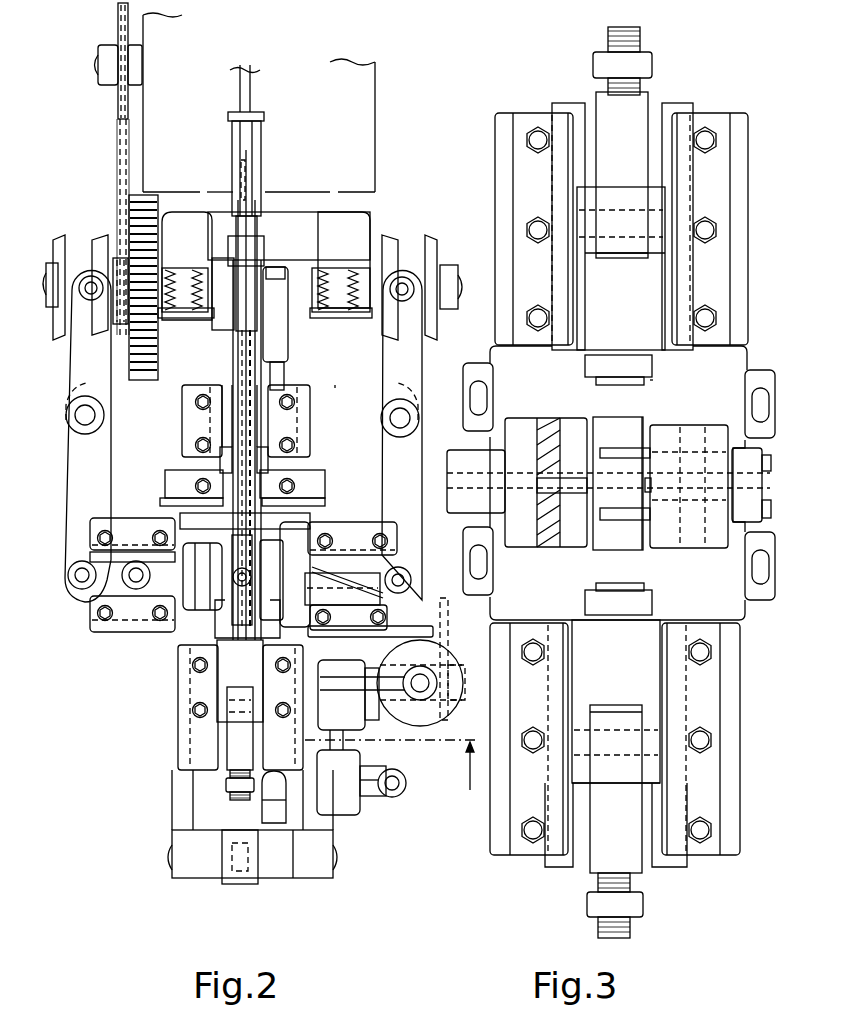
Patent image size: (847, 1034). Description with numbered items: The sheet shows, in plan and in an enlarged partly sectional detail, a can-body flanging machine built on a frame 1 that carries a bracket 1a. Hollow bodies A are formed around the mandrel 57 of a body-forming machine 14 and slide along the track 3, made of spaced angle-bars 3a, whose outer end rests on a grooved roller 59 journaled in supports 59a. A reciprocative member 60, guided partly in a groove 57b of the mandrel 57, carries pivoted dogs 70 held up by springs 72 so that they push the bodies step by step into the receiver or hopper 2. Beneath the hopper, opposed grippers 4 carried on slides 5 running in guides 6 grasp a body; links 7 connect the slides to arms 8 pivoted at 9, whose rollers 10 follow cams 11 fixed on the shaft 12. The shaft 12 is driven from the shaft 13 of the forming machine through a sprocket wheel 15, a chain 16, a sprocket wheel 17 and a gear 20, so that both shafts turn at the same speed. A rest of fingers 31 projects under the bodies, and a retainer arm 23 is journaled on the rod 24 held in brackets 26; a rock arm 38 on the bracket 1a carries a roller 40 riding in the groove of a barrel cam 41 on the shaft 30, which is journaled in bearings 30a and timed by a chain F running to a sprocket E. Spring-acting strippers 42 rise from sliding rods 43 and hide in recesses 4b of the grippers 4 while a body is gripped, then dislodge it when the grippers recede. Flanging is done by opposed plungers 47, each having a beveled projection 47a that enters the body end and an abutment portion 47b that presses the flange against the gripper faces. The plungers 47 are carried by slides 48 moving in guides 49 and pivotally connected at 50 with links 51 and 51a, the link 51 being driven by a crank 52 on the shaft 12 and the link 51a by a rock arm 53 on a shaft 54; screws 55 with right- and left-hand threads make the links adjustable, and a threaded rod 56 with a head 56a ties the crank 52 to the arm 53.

In FIG. 2, the frame 1 is at (342, 395).
In FIG. 2, the bracket 1a is at (318, 636).
In FIG. 2, the receiver or hopper 2 is at (235, 620).
In FIG. 2, the track or guideway 3 is at (234, 344).
In FIG. 2, the angle-bars 3a is at (256, 244).
In FIG. 3, the grippers 4 is at (548, 422).
In FIG. 3, the recesses 4b is at (545, 490).
In FIG. 2, the slides 5 is at (100, 598).
In FIG. 3, the slides 5 is at (608, 485).
In FIG. 2, the guides 6 is at (120, 535).
In FIG. 3, the guides 6 is at (465, 404).
In FIG. 2, the links 7 is at (239, 585).
In FIG. 2, the arms 8 is at (243, 437).
In FIG. 2, the pivot 9 is at (85, 415).
In FIG. 2, the projections or rollers 10 is at (90, 292).
In FIG. 2, the cams 11 is at (79, 246).
In FIG. 2, the shaft 12 is at (458, 290).
In FIG. 2, the shaft 13 is at (96, 65).
In FIG. 2, the can-body forming machine 14 is at (259, 102).
In FIG. 2, the sprocket wheel 15 is at (118, 18).
In FIG. 2, the chain 16 is at (119, 146).
In FIG. 2, the sprocket wheel 17 is at (118, 322).
In FIG. 2, the gear 20 is at (146, 210).
In FIG. 2, the arm 23 is at (396, 760).
In FIG. 2, the rod or shaft 24 is at (392, 798).
In FIG. 2, the brackets 26 is at (377, 814).
In FIG. 2, the shaft 30 is at (420, 688).
In FIG. 2, the bearings 30a is at (361, 695).
In FIG. 3, the rest fingers 31 is at (632, 458).
In FIG. 2, the rock arm 38 is at (310, 530).
In FIG. 2, the pin or roller 40 is at (434, 636).
In FIG. 2, the barrel cam 41 is at (420, 683).
In FIG. 3, the strippers 42 is at (585, 440).
In FIG. 3, the sliding rods 43 is at (448, 484).
In FIG. 2, the plungers or abutments 47 is at (240, 640).
In FIG. 3, the plungers or abutments 47 is at (618, 484).
In FIG. 3, the projections 47a is at (616, 384).
In FIG. 3, the abutment portions 47b is at (650, 380).
In FIG. 2, the slides 48 is at (266, 462).
In FIG. 3, the slides 48 is at (618, 485).
In FIG. 2, the ways or guides 49 is at (305, 405).
In FIG. 3, the ways or guides 49 is at (619, 484).
In FIG. 2, the pivotal connection 50 is at (225, 448).
In FIG. 3, the pivotal connection 50 is at (654, 237).
In FIG. 3, the link 51 is at (622, 175).
In FIG. 2, the link 51a is at (240, 728).
In FIG. 3, the link 51a is at (616, 789).
In FIG. 2, the crank 52 is at (222, 262).
In FIG. 2, the rock arm 53 is at (240, 884).
In FIG. 2, the shaft 54 is at (170, 855).
In FIG. 2, the screws 55 is at (229, 788).
In FIG. 3, the screws 55 is at (642, 66).
In FIG. 2, the link or rod 56 is at (286, 372).
In FIG. 2, the head 56a is at (281, 318).
In FIG. 2, the mandrel 57 is at (262, 136).
In FIG. 2, the groove 57b is at (258, 194).
In FIG. 2, the roller 59 is at (210, 472).
In FIG. 2, the supports 59a is at (315, 482).
In FIG. 2, the reciprocative member 60 is at (252, 72).
In FIG. 2, the dogs or fingers 70 is at (241, 186).
In FIG. 2, the springs 72 is at (240, 176).
In FIG. 3, the hollow body A is at (618, 483).
In FIG. 2, the sprocket E is at (452, 706).
In FIG. 2, the chain F is at (445, 608).